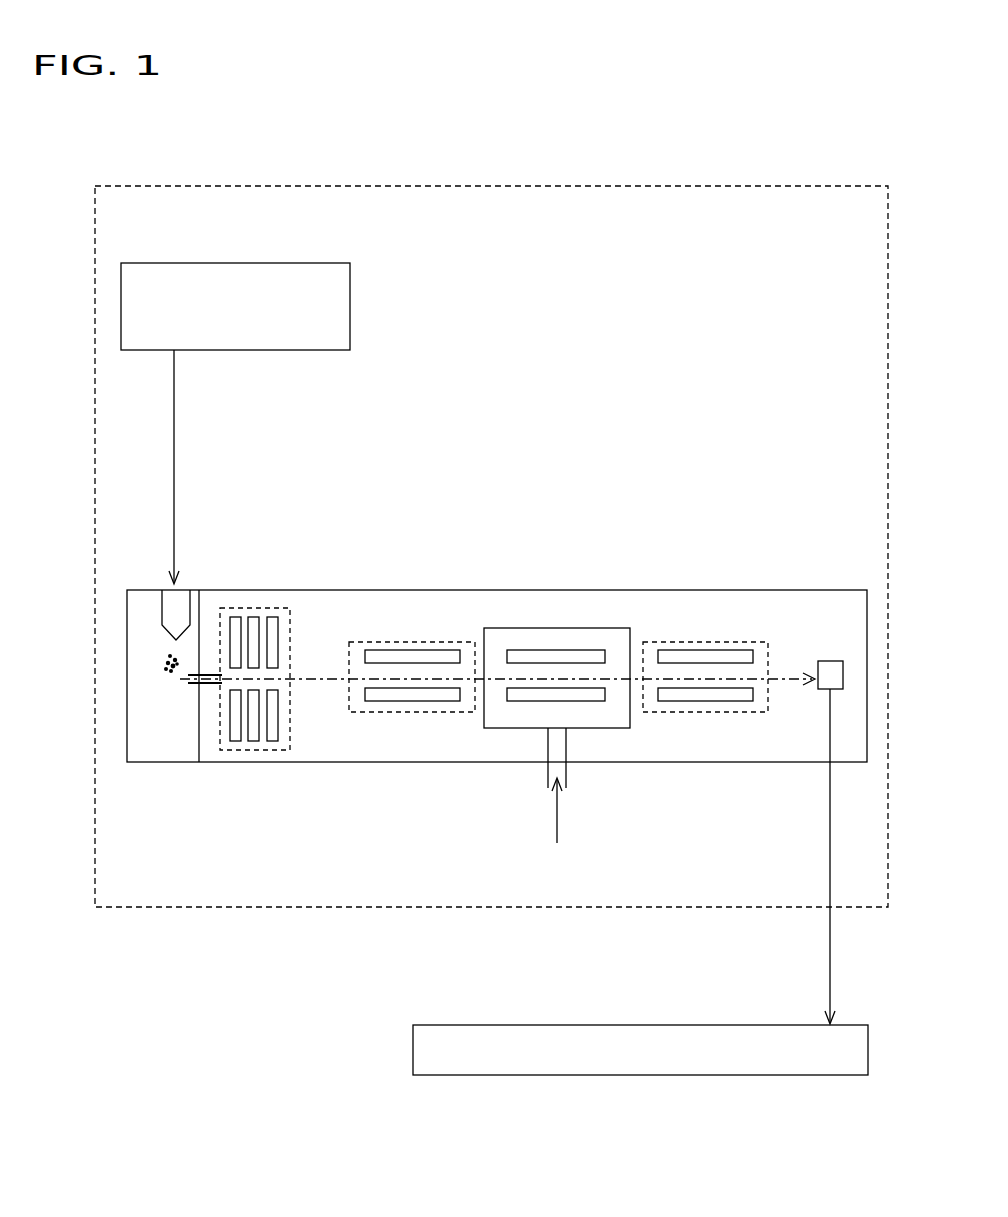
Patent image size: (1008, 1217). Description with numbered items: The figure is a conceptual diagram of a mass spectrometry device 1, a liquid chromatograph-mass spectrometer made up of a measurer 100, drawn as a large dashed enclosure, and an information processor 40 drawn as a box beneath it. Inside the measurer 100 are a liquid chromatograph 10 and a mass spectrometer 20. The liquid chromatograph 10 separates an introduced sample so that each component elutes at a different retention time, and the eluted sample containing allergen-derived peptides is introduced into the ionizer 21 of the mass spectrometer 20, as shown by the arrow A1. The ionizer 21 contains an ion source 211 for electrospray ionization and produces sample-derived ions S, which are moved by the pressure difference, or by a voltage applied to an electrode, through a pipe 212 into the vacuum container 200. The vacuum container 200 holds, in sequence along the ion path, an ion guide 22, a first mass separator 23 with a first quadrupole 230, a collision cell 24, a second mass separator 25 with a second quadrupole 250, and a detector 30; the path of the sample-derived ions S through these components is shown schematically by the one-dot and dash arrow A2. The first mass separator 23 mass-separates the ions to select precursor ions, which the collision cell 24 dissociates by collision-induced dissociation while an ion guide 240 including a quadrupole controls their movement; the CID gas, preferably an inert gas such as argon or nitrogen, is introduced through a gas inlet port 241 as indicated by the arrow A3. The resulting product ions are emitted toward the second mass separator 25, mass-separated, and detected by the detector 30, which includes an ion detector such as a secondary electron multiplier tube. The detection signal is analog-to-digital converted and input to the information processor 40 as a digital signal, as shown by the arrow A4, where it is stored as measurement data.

The mass spectrometry device 1 is at (301, 998).
The liquid chromatograph 10 is at (312, 262).
The mass spectrometer 20 is at (801, 519).
The ionizer 21 is at (148, 590).
The ion source 211 is at (178, 610).
The pipe 212 is at (213, 687).
The ion guide 22 is at (248, 606).
The first mass separator 23 is at (412, 621).
The first quadrupole 230 is at (425, 652).
The collision cell 24 is at (572, 673).
The ion guide 240 is at (565, 652).
The gas inlet port 241 is at (567, 737).
The second mass separator 25 is at (705, 621).
The second quadrupole 250 is at (713, 652).
The detector 30 is at (828, 660).
The information processor 40 is at (413, 1040).
The measurer 100 is at (365, 893).
The vacuum container 200 is at (316, 605).
The sample-derived ions S is at (167, 673).
The arrow A1 is at (175, 458).
The arrow A2 is at (787, 683).
The arrow A3 is at (560, 817).
The arrow A4 is at (828, 963).